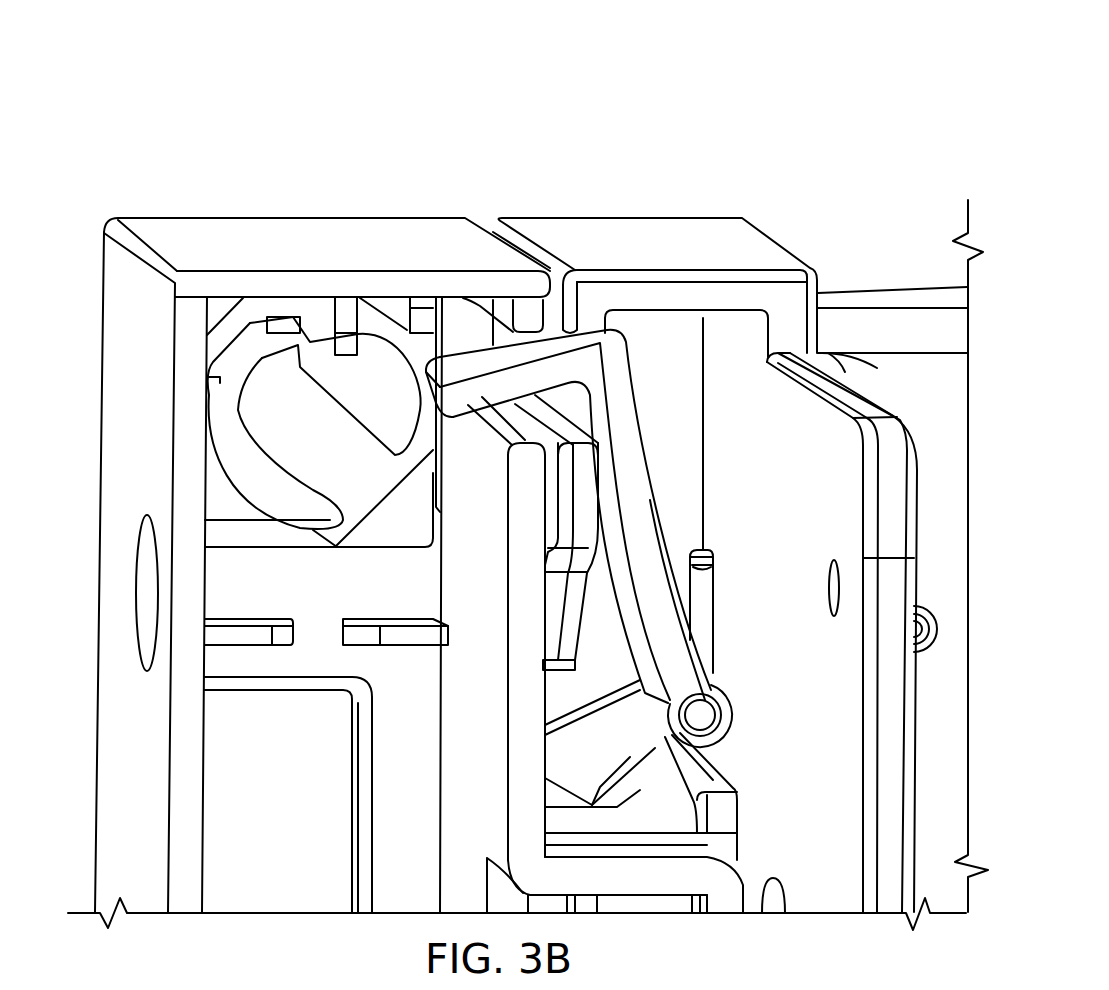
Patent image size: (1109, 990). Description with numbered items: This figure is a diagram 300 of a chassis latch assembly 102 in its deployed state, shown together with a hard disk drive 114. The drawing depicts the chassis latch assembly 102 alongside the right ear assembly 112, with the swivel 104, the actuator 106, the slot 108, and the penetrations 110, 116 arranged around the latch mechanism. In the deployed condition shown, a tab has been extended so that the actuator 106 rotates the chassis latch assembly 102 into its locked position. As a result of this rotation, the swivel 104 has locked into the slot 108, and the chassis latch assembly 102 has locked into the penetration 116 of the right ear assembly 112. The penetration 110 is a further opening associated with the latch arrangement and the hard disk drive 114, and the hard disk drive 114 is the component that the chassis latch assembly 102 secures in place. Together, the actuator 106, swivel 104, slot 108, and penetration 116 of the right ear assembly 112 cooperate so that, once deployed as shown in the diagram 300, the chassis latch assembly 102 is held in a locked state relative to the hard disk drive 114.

The diagram 300 is at (733, 161).
The chassis latch assembly 102 is at (632, 446).
The swivel 104 is at (627, 735).
The actuator 106 is at (710, 616).
The slot 108 is at (600, 807).
The penetration 110 is at (580, 430).
The right ear assembly 112 is at (288, 228).
The hard disk drive 114 is at (622, 218).
The penetration 116 is at (503, 432).